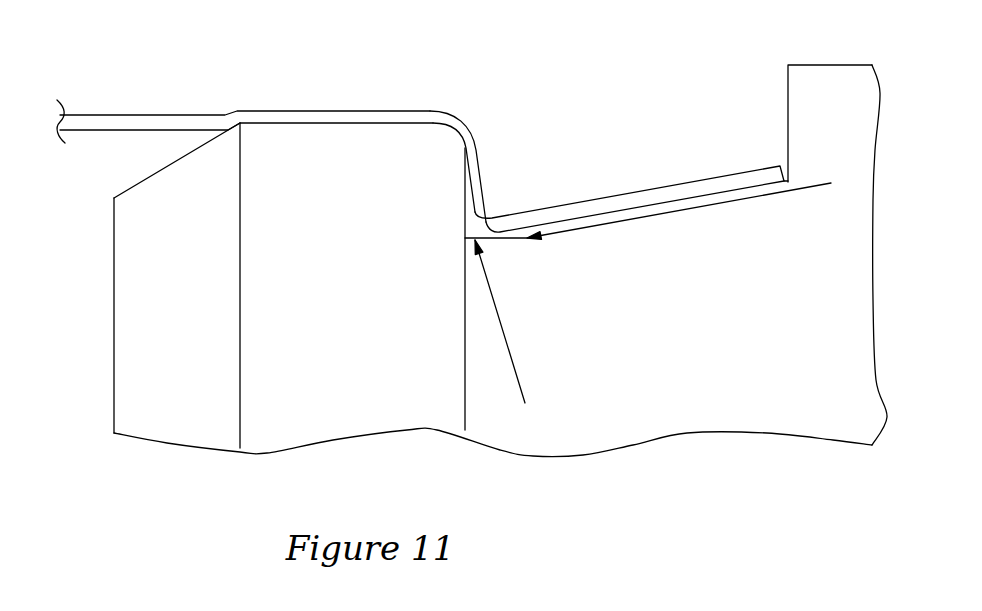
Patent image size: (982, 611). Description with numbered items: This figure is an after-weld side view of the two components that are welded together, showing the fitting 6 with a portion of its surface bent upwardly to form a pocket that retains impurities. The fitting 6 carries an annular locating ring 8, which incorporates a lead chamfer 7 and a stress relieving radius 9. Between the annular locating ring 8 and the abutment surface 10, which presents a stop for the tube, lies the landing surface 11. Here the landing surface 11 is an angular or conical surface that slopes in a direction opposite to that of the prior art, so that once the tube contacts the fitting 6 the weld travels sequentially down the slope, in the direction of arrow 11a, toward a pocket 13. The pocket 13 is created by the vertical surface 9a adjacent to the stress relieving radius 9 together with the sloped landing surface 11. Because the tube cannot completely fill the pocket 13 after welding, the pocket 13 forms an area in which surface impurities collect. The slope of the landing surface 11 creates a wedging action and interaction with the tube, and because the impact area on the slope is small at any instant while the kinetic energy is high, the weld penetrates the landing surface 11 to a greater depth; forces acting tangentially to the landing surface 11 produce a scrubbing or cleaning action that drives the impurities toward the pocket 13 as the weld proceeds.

The fitting 6 is at (352, 324).
The lead chamfer 7 is at (157, 170).
The annular locating ring 8 is at (357, 122).
The stress relieving radius 9 is at (455, 127).
The vertical surface 9a is at (477, 147).
The abutment surface 10 is at (832, 63).
The landing surface 11 is at (648, 203).
The arrow 11a is at (565, 232).
The pocket 13 is at (502, 325).